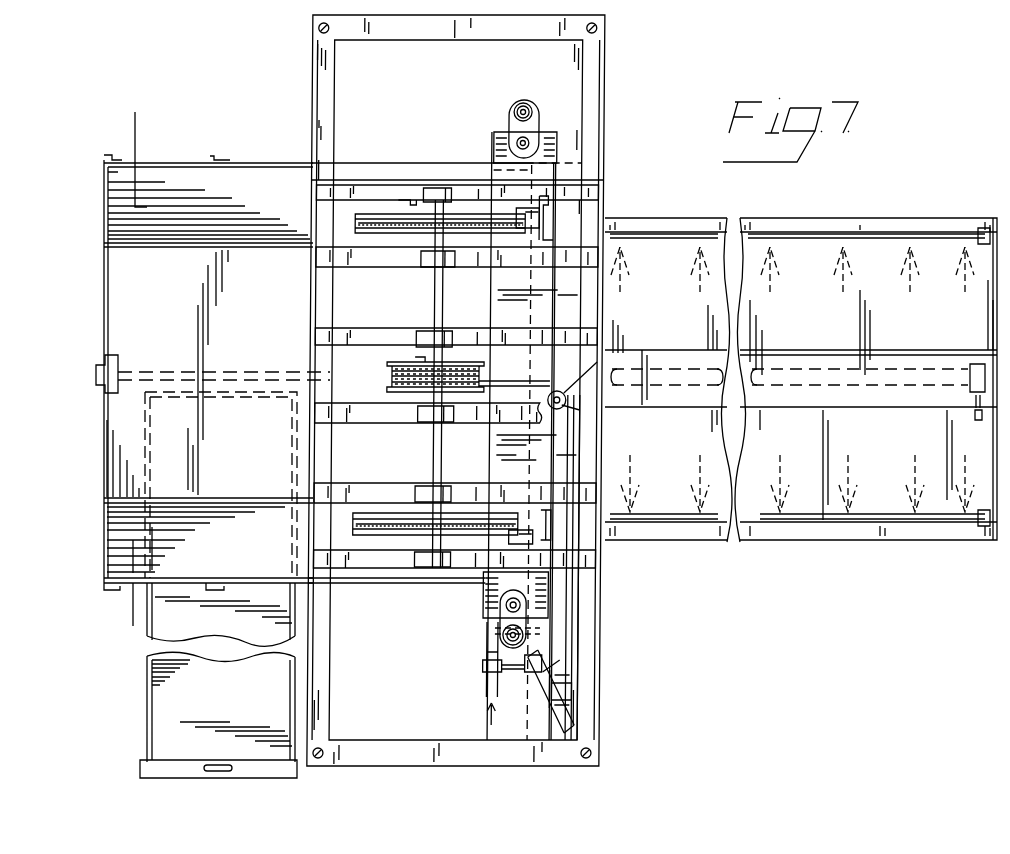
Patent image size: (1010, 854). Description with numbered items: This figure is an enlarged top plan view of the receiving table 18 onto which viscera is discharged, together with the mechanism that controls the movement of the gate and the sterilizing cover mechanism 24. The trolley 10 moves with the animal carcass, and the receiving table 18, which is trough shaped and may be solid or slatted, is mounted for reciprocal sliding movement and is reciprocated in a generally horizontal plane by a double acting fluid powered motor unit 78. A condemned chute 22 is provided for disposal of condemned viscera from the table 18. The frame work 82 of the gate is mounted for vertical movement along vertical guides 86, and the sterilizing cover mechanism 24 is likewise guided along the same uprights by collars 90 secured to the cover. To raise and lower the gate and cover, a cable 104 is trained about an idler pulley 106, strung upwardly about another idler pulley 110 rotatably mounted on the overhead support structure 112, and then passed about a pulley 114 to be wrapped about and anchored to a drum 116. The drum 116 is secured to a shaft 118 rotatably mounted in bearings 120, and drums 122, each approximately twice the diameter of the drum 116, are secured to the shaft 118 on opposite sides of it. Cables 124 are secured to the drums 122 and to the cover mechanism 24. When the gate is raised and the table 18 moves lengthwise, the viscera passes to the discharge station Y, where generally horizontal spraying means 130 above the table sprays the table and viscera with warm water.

The trolley 10 is at (143, 124).
The receiving table 18 is at (180, 154).
The condemned chute 22 is at (138, 692).
The sterilizing cover mechanism 24 is at (482, 605).
The fluid powered motor unit 78 is at (925, 372).
The frame work 82 is at (541, 143).
The vertical guides 86 is at (546, 82).
The collars 90 is at (543, 113).
The cable 104 is at (603, 430).
The idler pulley 106 is at (550, 675).
The idler pulley 110 is at (580, 682).
The overhead support structure 112 is at (603, 146).
The pulley 114 is at (600, 362).
The drum 116 is at (410, 360).
The shaft 118 is at (443, 315).
The bearings 120 is at (428, 257).
The drums 122 is at (380, 212).
The cables 124 is at (468, 225).
The spraying means 130 is at (900, 233).
The discharge station Y is at (846, 218).